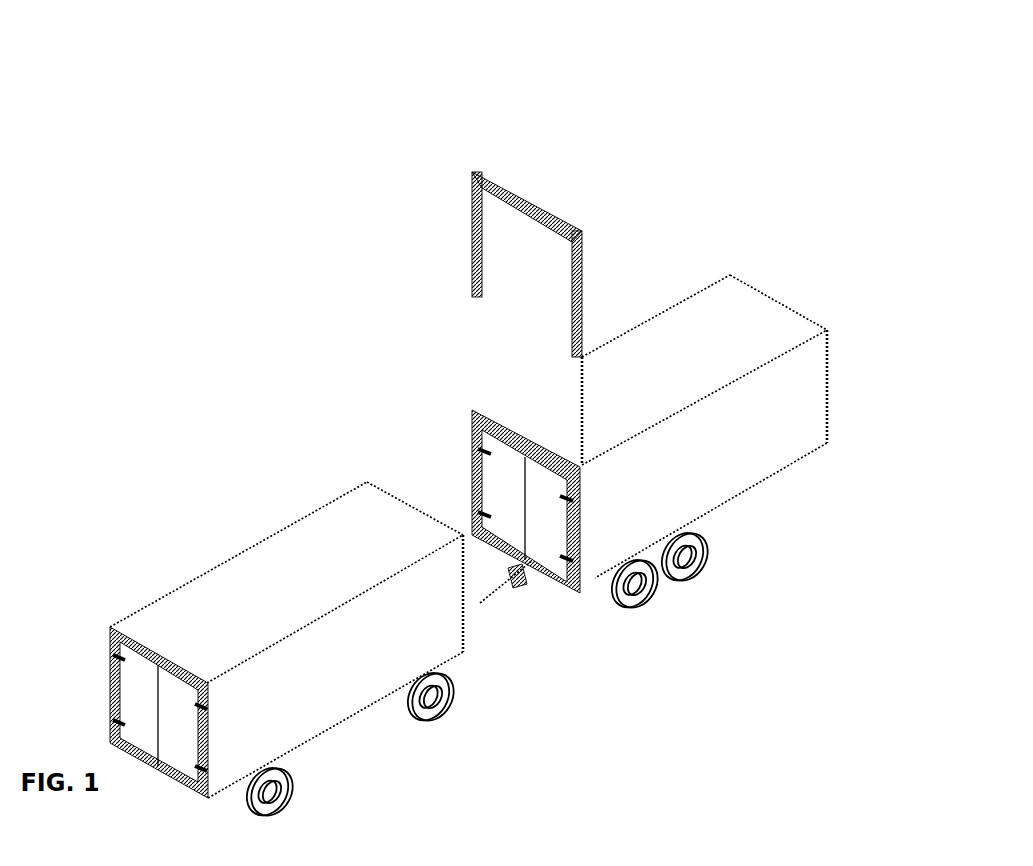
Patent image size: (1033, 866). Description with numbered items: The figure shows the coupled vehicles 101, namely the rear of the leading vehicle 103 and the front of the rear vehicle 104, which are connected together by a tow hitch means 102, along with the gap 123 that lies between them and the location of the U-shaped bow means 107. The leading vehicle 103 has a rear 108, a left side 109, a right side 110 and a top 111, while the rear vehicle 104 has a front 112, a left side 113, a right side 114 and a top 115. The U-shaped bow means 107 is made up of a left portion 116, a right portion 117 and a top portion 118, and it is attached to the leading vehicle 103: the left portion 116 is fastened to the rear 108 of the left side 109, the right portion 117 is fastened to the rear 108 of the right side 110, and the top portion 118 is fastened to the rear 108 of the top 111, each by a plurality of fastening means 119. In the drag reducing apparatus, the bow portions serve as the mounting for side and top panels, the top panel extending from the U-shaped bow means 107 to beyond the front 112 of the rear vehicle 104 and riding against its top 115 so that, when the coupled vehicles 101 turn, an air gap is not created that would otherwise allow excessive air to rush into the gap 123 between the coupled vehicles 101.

The coupled vehicles 101 is at (75, 89).
The tow hitch means 102 is at (483, 602).
The leading vehicle 103 is at (637, 418).
The rear vehicle 104 is at (286, 636).
The U-shaped bow means 107 is at (531, 249).
The rear 108 is at (539, 490).
The left side 109 is at (678, 298).
The right side 110 is at (785, 432).
The top 111 is at (768, 312).
The front 112 is at (362, 487).
The left side 113 is at (247, 545).
The right side 114 is at (360, 682).
The top 115 is at (143, 640).
The left portion 116 is at (473, 215).
The right portion 117 is at (585, 270).
The top portion 118 is at (489, 178).
The fastening means 119 is at (577, 540).
The gap 123 is at (463, 406).